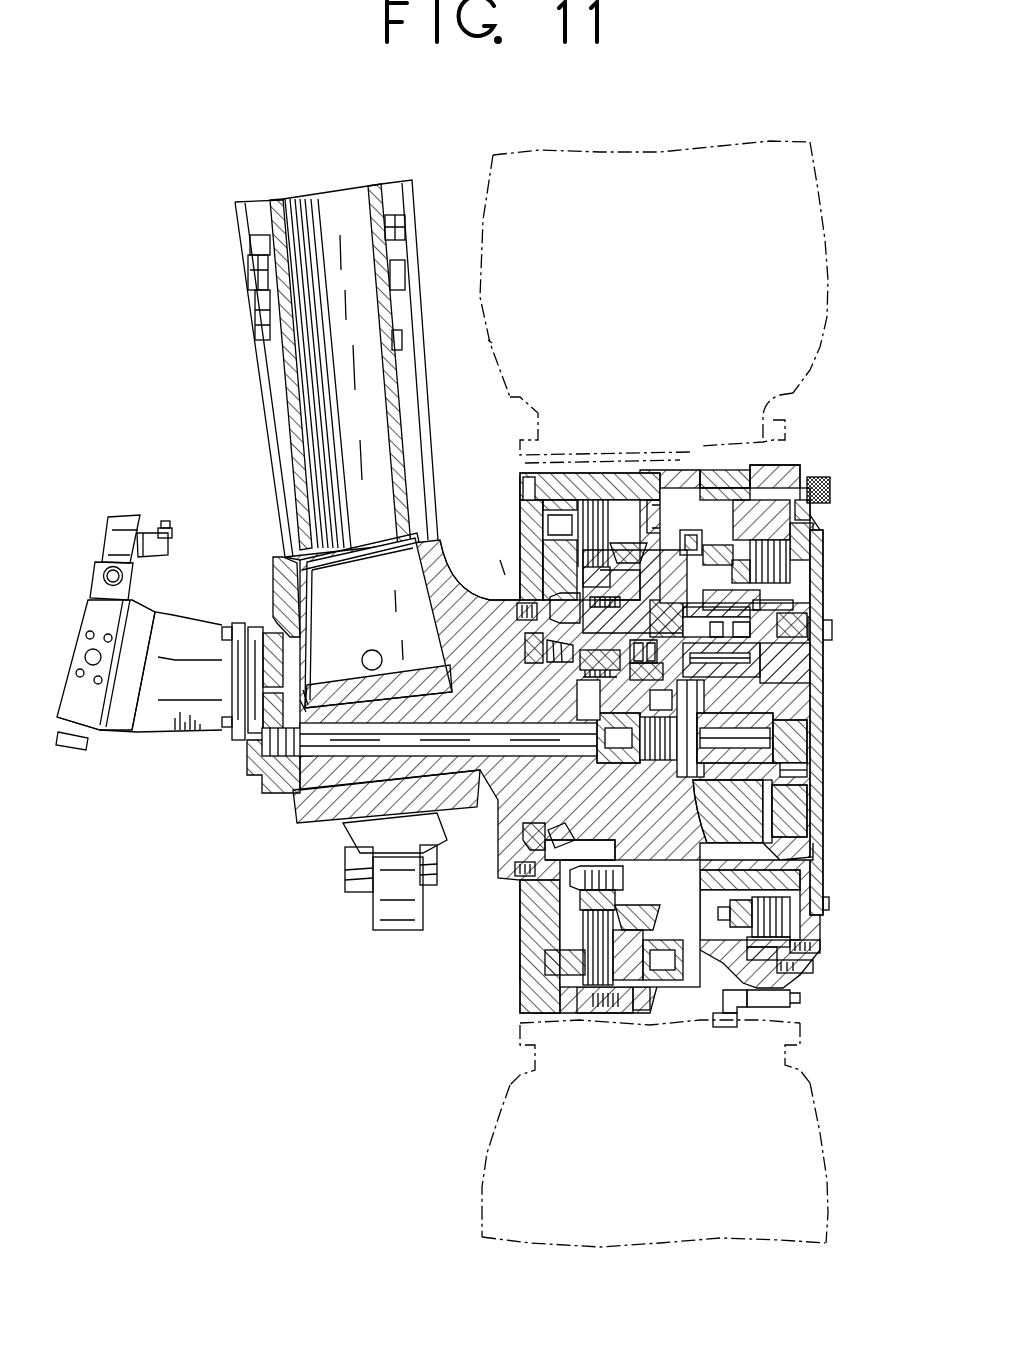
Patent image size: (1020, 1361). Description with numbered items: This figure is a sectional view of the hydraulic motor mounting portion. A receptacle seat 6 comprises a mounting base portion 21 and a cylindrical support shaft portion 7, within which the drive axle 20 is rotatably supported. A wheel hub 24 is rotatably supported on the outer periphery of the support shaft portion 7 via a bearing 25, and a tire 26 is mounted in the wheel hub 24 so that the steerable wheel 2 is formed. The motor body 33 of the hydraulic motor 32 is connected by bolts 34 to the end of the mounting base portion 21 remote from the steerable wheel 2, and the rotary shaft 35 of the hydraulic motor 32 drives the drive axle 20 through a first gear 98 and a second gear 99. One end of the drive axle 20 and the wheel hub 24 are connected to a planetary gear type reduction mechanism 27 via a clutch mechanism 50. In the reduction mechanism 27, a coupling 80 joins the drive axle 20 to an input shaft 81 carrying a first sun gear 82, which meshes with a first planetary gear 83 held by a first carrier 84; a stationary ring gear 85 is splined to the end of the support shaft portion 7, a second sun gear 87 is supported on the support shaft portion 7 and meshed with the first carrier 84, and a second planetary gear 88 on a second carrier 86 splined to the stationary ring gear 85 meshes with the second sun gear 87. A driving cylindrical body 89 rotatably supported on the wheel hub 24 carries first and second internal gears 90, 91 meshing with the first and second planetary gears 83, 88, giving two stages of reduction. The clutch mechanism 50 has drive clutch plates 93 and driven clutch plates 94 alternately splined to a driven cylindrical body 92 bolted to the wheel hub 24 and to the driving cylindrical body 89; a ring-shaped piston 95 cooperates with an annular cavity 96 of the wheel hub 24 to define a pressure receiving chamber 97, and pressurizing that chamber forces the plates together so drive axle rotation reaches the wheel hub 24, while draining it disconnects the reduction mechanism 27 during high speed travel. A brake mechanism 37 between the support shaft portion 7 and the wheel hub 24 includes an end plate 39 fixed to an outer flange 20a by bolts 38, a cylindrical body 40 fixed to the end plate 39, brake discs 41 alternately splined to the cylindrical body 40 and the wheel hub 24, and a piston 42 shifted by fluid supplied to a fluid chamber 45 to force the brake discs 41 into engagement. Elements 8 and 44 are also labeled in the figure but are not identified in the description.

The steerable wheel 2 is at (478, 250).
The receptacle seat 6 is at (483, 600).
The support shaft portion 7 is at (578, 776).
The hydraulic cylinder 8 is at (266, 388).
The drive axle 20 is at (488, 730).
The outer flange 20a is at (523, 880).
The mounting base portion 21 is at (280, 597).
The wheel hub 24 is at (667, 563).
The bearing 25 is at (525, 662).
The tire 26 is at (488, 340).
The reduction mechanism 27 is at (687, 867).
The hydraulic motor 32 is at (117, 717).
The motor body 33 is at (203, 733).
The bolts 34 is at (222, 633).
The rotary shaft 35 is at (303, 677).
The brake mechanism 37 is at (503, 473).
The bolts 38 is at (528, 860).
The end plate 39 is at (527, 913).
The cylindrical body 40 is at (600, 1010).
The brake discs 41 is at (612, 883).
The piston 42 is at (530, 953).
The seal 44 is at (660, 970).
The fluid chamber 45 is at (468, 514).
The clutch mechanism 50 is at (763, 517).
The coupling 80 is at (625, 722).
The input shaft 81 is at (762, 740).
The first sun gear 82 is at (793, 763).
The first planetary gear 83 is at (815, 705).
The first carrier 84 is at (800, 810).
The stationary ring gear 85 is at (675, 623).
The second carrier 86 is at (763, 847).
The second sun gear 87 is at (724, 750).
The second planetary gear 88 is at (755, 612).
The driving cylindrical body 89 is at (722, 593).
The first internal gear 90 is at (793, 603).
The second internal gear 91 is at (832, 623).
The driven cylindrical body 92 is at (820, 522).
The drive clutch plates 93 is at (745, 545).
The driven clutch plates 94 is at (817, 558).
The piston 95 is at (733, 570).
The annular cavity 96 is at (728, 562).
The pressure receiving chamber 97 is at (693, 530).
The first gear 98 is at (376, 620).
The second gear 99 is at (277, 793).